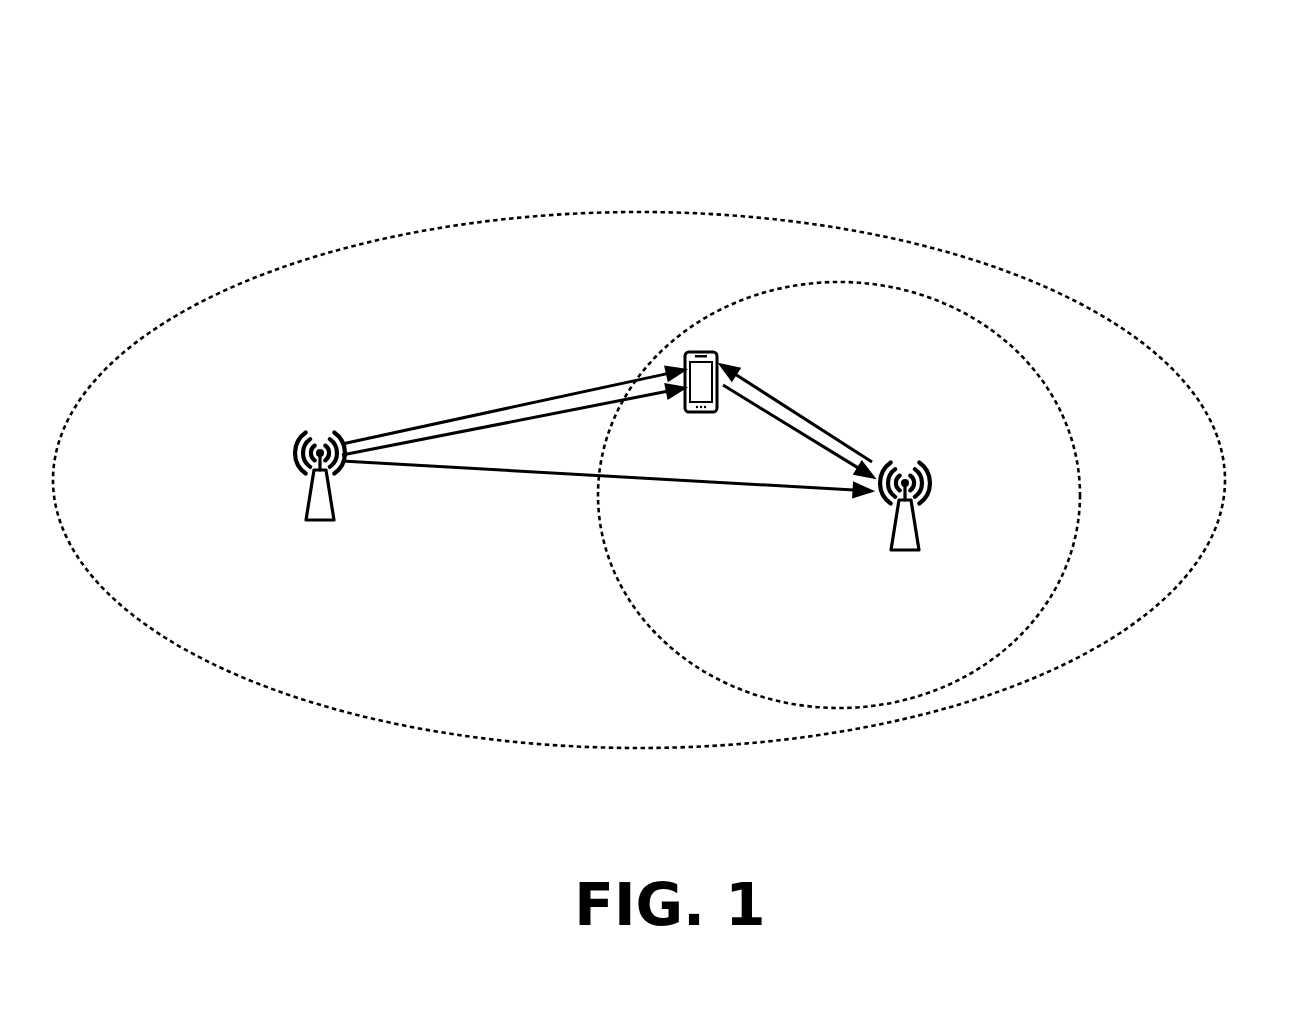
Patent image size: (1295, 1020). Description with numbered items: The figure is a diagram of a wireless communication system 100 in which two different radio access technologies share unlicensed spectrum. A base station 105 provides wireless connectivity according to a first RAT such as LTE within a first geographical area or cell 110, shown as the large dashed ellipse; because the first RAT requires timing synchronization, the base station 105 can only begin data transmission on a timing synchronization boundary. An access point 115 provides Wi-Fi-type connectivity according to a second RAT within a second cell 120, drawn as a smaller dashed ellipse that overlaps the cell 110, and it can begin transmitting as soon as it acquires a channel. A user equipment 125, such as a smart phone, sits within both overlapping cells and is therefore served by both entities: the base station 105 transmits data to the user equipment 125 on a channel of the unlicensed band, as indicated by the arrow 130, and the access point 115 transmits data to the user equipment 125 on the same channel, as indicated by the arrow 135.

The wireless communication system 100 is at (1170, 89).
The base station 105 is at (313, 522).
The cell 110 is at (272, 688).
The access point 115 is at (908, 552).
The cell 120 is at (1081, 484).
The user equipment 125 is at (700, 350).
The arrow 130 is at (557, 390).
The arrow 135 is at (820, 425).